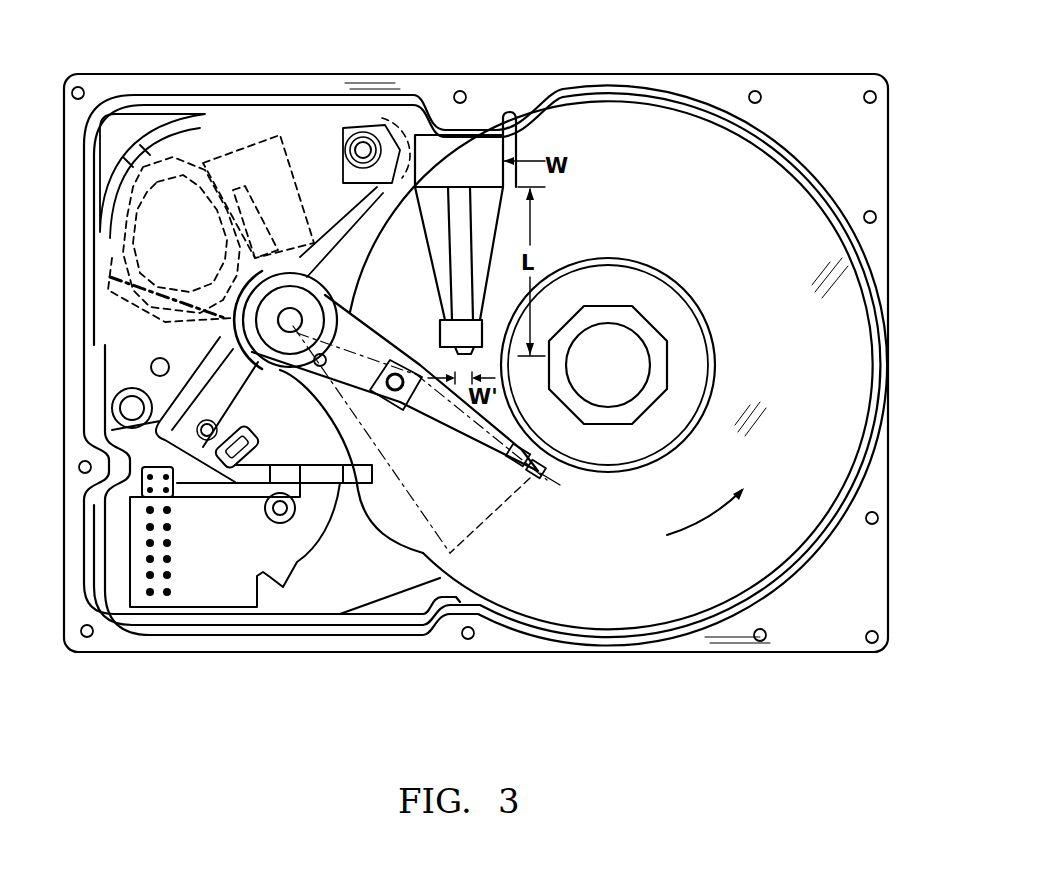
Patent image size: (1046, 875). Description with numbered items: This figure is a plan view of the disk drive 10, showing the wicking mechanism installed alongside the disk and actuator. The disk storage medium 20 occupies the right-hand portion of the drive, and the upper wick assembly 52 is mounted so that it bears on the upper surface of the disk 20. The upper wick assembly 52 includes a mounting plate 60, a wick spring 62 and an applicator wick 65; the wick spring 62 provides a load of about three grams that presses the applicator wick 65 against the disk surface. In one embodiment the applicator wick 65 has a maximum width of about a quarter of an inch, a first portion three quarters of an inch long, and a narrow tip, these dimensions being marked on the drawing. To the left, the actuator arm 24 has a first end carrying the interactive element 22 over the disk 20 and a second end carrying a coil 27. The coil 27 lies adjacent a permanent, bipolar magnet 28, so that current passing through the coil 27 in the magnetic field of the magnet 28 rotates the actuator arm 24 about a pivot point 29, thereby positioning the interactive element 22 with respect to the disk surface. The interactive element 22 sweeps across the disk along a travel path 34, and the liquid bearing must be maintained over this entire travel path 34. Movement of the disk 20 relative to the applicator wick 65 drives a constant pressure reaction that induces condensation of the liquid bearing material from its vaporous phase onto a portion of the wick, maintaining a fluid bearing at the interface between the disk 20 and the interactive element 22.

The disk drive 10 is at (772, 58).
The disk storage medium 20 is at (777, 553).
The interactive element 22 is at (540, 473).
The actuator arm 24 is at (355, 337).
The coil 27 is at (183, 154).
The permanent bipolar magnet 28 is at (281, 136).
The pivot point 29 is at (293, 318).
The travel path 34 is at (490, 520).
The upper wick assembly 52 is at (409, 120).
The mounting plate 60 is at (503, 233).
The wick spring 62 is at (457, 230).
The applicator wick 65 is at (477, 268).